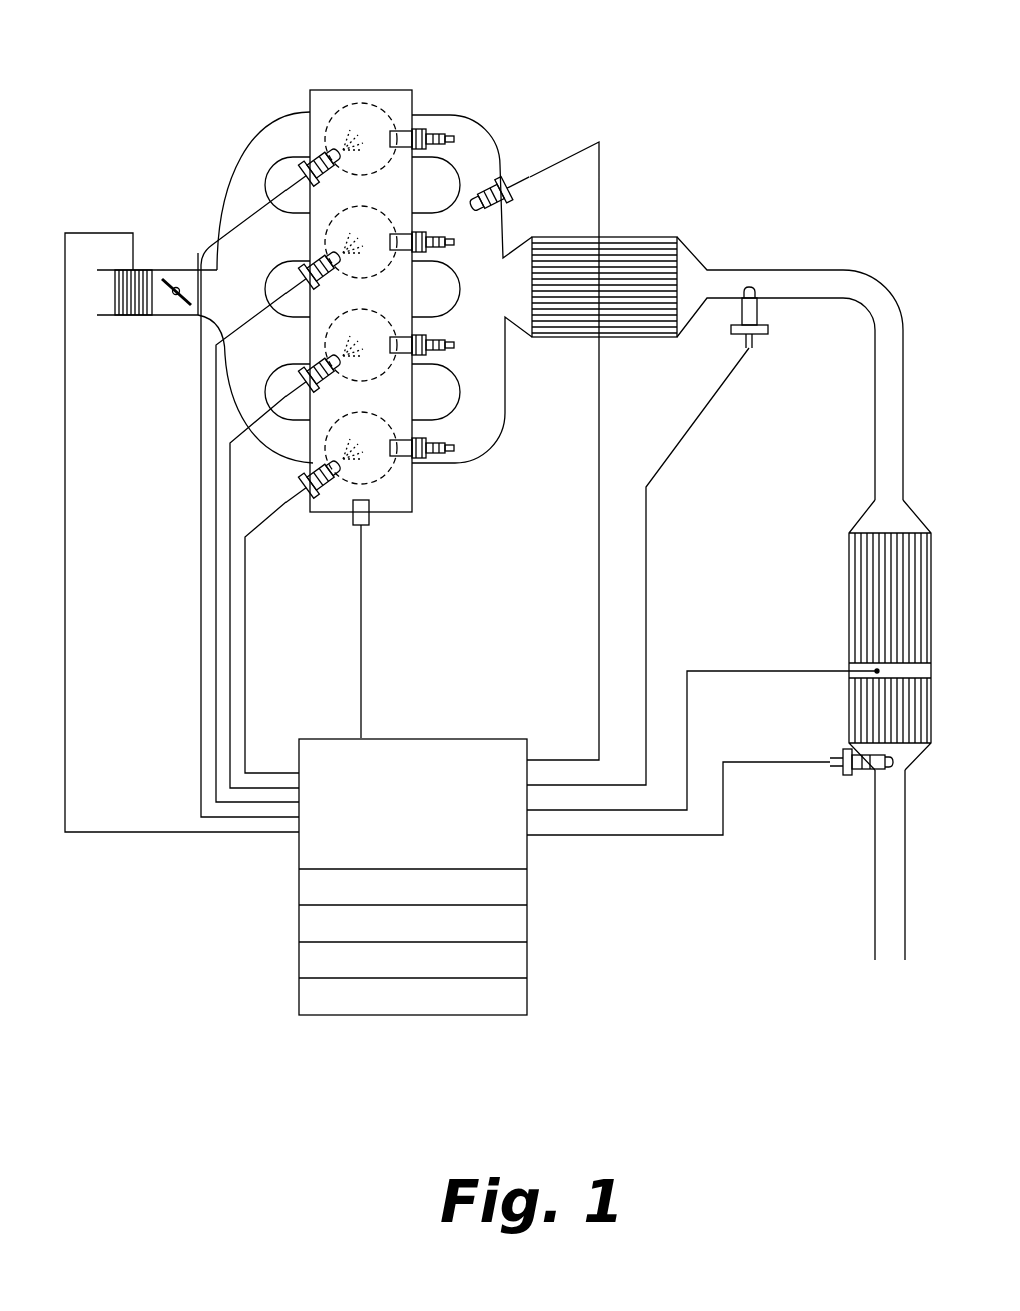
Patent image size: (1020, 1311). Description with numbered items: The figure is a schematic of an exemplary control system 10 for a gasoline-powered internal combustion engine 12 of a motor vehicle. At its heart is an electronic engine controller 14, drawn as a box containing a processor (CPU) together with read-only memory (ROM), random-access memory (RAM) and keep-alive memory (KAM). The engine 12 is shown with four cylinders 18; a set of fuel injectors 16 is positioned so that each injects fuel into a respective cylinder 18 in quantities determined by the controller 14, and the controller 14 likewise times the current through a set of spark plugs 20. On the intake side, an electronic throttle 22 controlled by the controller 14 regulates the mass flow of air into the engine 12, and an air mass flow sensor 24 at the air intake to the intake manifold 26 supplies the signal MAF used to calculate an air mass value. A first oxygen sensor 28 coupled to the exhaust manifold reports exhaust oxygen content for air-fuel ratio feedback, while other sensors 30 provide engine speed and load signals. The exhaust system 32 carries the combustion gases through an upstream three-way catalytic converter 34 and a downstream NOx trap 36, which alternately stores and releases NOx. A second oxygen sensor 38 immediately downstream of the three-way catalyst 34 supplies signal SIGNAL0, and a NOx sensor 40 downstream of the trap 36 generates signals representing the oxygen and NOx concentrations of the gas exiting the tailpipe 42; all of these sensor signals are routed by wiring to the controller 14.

The control system 10 is at (224, 1006).
The internal combustion engine 12 is at (398, 515).
The electronic engine controller 14 is at (530, 848).
The fuel injectors 16 is at (300, 176).
The cylinder 18 is at (361, 103).
The spark plugs 20 is at (420, 128).
The electronic throttle 22 is at (172, 296).
The air mass flow sensor 24 is at (130, 316).
The intake manifold 26 is at (222, 393).
The first oxygen sensor 28 is at (493, 170).
The other sensors 30 is at (362, 527).
The exhaust system 32 is at (866, 252).
The three-way catalytic converter 34 is at (640, 237).
The NOx trap 36 is at (848, 580).
The second oxygen sensor 38 is at (760, 314).
The NOx sensor 40 is at (855, 775).
The tailpipe 42 is at (880, 866).